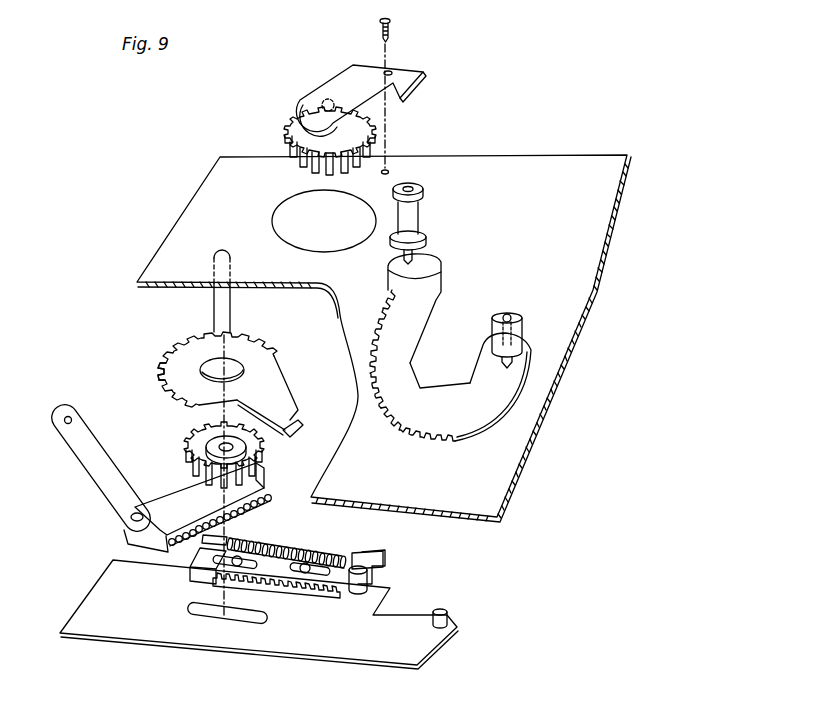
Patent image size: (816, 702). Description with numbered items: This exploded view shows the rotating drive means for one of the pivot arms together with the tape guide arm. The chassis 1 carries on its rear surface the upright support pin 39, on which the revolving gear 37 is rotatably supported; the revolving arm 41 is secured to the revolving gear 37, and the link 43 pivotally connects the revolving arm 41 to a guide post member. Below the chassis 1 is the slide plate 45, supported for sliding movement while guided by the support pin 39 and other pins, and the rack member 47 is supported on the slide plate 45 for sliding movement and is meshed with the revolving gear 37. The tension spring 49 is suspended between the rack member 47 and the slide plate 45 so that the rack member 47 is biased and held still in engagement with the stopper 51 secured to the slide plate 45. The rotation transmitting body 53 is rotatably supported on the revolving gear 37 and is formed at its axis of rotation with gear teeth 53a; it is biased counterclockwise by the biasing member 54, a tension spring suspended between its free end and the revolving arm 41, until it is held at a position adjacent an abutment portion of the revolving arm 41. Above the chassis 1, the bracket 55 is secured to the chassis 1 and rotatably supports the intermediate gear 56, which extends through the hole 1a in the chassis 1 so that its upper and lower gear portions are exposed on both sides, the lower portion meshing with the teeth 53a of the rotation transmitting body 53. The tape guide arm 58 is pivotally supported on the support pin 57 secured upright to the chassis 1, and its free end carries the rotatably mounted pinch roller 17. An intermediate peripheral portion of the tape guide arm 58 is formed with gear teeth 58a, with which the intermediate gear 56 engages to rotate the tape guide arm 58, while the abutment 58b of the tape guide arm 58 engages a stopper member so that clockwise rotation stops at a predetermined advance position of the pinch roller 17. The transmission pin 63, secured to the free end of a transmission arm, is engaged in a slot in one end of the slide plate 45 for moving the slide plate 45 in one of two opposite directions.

The chassis 1 is at (197, 207).
The hole 1a is at (275, 216).
The pinch roller 17 is at (428, 215).
The revolving gear 37 is at (190, 440).
The support pin 39 is at (212, 311).
The revolving arm 41 is at (182, 482).
The link 43 is at (107, 471).
The slide plate 45 is at (93, 607).
The rack member 47 is at (200, 575).
The tension spring 49 is at (322, 552).
The stopper 51 is at (367, 588).
The rotation transmitting body 53 is at (180, 370).
The gear teeth 53a is at (174, 350).
The biasing member 54 is at (267, 498).
The bracket 55 is at (342, 82).
The intermediate gear 56 is at (297, 113).
The support pin 57 is at (509, 316).
The tape guide arm 58 is at (412, 322).
The gear teeth 58a is at (382, 405).
The abutment 58b is at (450, 384).
The transmission pin 63 is at (440, 612).